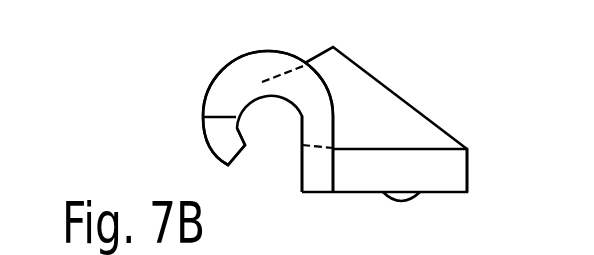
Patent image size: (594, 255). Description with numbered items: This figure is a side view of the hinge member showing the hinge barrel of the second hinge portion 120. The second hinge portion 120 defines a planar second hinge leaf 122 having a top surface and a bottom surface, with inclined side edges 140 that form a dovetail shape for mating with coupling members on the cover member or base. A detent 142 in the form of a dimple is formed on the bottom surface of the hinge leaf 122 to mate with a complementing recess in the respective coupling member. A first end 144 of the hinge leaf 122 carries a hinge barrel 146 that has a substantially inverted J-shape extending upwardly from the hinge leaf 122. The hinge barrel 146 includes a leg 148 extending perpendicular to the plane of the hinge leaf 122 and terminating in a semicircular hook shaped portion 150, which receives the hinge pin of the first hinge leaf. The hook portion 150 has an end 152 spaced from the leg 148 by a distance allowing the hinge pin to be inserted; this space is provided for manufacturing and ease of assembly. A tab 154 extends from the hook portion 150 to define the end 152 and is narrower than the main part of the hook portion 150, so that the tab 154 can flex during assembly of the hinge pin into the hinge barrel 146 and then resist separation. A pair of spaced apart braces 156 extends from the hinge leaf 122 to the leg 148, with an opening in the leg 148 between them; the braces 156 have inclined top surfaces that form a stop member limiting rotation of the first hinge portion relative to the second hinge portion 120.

The second hinge portion 120 is at (236, 55).
The second hinge leaf 122 is at (473, 161).
The inclined side edges 140 is at (450, 184).
The detent 142 is at (412, 200).
The first end 144 is at (352, 150).
The hinge barrel 146 is at (294, 50).
The leg 148 is at (312, 172).
The hook shaped portion 150 is at (230, 77).
The end 152 is at (240, 163).
The tab 154 is at (218, 137).
The braces 156 is at (413, 102).